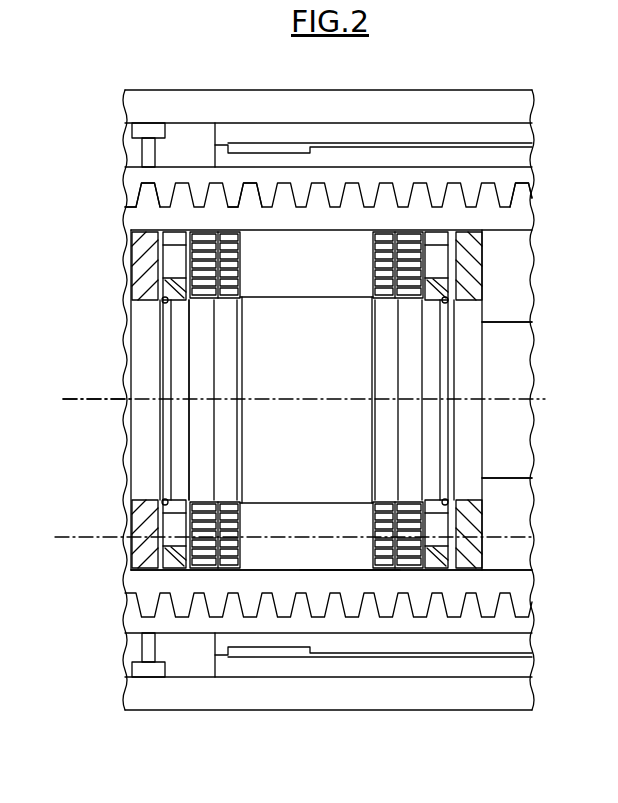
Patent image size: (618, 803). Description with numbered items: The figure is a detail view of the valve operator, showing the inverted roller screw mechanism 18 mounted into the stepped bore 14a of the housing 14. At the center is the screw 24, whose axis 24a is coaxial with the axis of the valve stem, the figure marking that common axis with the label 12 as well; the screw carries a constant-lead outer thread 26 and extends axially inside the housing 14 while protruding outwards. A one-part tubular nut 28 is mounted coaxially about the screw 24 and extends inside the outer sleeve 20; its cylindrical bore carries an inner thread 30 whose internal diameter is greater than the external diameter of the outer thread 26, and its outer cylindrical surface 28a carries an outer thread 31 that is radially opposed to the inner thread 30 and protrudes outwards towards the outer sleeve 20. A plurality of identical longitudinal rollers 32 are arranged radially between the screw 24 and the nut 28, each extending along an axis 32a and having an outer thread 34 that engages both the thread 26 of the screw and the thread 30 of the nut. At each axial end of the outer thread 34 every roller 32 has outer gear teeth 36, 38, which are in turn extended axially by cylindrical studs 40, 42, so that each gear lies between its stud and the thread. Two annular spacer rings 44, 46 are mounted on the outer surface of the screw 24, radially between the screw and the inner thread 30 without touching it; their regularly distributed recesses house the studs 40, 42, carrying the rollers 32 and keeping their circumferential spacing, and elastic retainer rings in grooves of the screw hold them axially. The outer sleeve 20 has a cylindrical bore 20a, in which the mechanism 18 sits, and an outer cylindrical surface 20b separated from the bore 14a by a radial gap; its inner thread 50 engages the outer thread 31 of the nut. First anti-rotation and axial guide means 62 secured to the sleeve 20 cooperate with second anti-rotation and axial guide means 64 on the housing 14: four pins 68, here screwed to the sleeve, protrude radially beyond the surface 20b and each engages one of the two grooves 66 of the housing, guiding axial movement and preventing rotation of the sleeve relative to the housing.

The axis of rotation 12 is at (293, 375).
The housing 14 is at (203, 85).
The bore 14a is at (502, 158).
The inverted roller screw mechanism 18 is at (495, 258).
The outer sleeve 20 is at (449, 170).
The cylindrical bore 20a is at (127, 214).
The outer cylindrical surface 20b is at (535, 145).
The screw 24 is at (522, 352).
The axis 24a is at (73, 398).
The outer thread 26 is at (274, 565).
The nut 28 is at (524, 583).
The outer cylindrical surface 28a is at (521, 192).
The inner thread 30 is at (497, 570).
The outer thread 31 is at (149, 193).
The roller 32 is at (215, 565).
The axis 32a is at (108, 538).
The outer thread 34 is at (347, 566).
The outer gear teeth 36 is at (173, 657).
The outer gear teeth 38 is at (418, 570).
The cylindrical stud 40 is at (177, 547).
The cylindrical stud 42 is at (448, 568).
The spacer ring 44 is at (162, 502).
The spacer ring 46 is at (452, 501).
The inner thread 50 is at (238, 198).
The first anti-rotation and axial guide means 62 is at (186, 132).
The second anti-rotation and axial guide means 64 is at (437, 125).
The groove 66 is at (388, 132).
The pin 68 is at (160, 128).